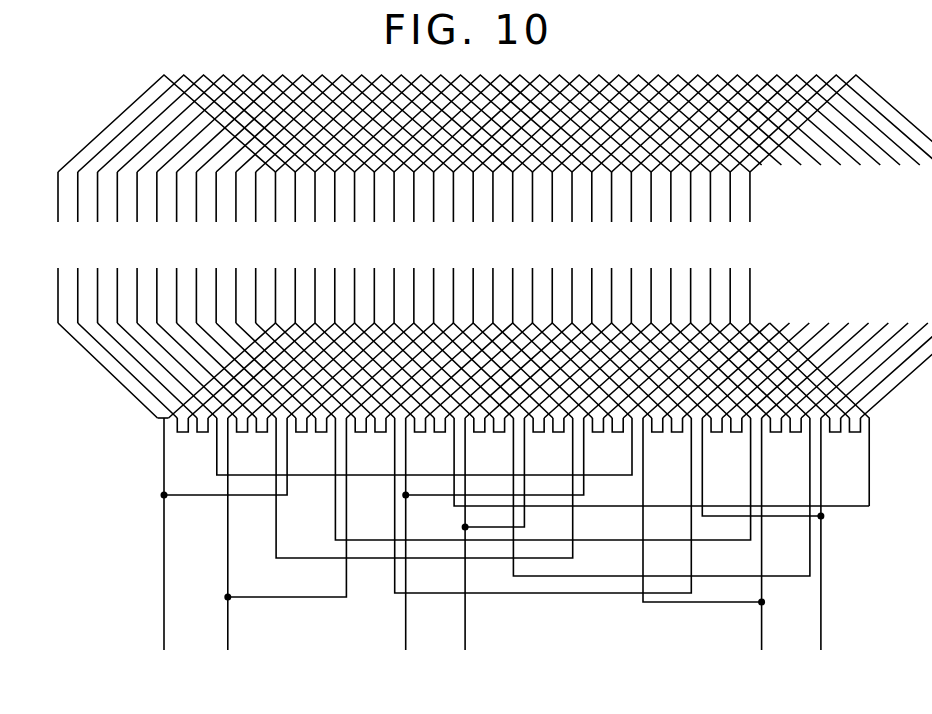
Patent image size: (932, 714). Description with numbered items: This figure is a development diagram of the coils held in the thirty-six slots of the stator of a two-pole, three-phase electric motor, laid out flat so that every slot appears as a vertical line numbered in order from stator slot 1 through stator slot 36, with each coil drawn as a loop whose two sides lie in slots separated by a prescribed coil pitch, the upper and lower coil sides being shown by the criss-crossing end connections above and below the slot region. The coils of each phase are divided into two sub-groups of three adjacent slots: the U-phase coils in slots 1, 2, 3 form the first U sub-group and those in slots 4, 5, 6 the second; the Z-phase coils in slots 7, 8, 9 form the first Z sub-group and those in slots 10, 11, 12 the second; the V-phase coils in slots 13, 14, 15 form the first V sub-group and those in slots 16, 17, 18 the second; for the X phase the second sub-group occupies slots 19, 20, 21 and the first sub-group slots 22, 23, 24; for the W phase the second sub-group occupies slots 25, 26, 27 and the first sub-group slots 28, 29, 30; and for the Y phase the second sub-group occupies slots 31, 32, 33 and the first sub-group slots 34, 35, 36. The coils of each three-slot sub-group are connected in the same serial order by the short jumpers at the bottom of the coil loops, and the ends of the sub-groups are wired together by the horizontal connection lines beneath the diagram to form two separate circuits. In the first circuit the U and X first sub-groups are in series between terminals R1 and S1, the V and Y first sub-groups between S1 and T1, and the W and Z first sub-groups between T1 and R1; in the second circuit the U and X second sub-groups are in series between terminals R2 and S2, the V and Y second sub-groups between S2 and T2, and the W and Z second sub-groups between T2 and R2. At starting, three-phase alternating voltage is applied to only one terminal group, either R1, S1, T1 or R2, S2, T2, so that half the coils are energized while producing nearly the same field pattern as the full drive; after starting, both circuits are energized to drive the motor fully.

The stator slot 1 is at (58, 247).
The stator slot 2 is at (78, 247).
The stator slot 3 is at (98, 247).
The stator slot 4 is at (117, 247).
The stator slot 5 is at (137, 247).
The stator slot 6 is at (157, 247).
The stator slot 7 is at (177, 247).
The stator slot 8 is at (196, 247).
The stator slot 9 is at (216, 247).
The stator slot 10 is at (236, 247).
The stator slot 11 is at (256, 247).
The stator slot 12 is at (275, 247).
The stator slot 13 is at (295, 247).
The stator slot 14 is at (315, 247).
The stator slot 15 is at (335, 247).
The stator slot 16 is at (355, 247).
The stator slot 17 is at (374, 247).
The stator slot 18 is at (394, 247).
The stator slot 19 is at (414, 247).
The stator slot 20 is at (434, 247).
The stator slot 21 is at (453, 247).
The stator slot 22 is at (473, 247).
The stator slot 23 is at (493, 247).
The stator slot 24 is at (513, 247).
The stator slot 25 is at (532, 247).
The stator slot 26 is at (552, 247).
The stator slot 27 is at (572, 247).
The stator slot 28 is at (592, 247).
The stator slot 29 is at (612, 247).
The stator slot 30 is at (631, 247).
The stator slot 31 is at (651, 247).
The stator slot 32 is at (671, 247).
The stator slot 33 is at (691, 247).
The stator slot 34 is at (710, 247).
The stator slot 35 is at (730, 247).
The stator slot 36 is at (750, 247).
The terminal of the first circuit R1 is at (165, 548).
The terminal of the second circuit R2 is at (229, 548).
The terminal of the first circuit S1 is at (407, 548).
The terminal of the second circuit S2 is at (468, 548).
The terminal of the first circuit T1 is at (821, 548).
The terminal of the second circuit T2 is at (763, 548).